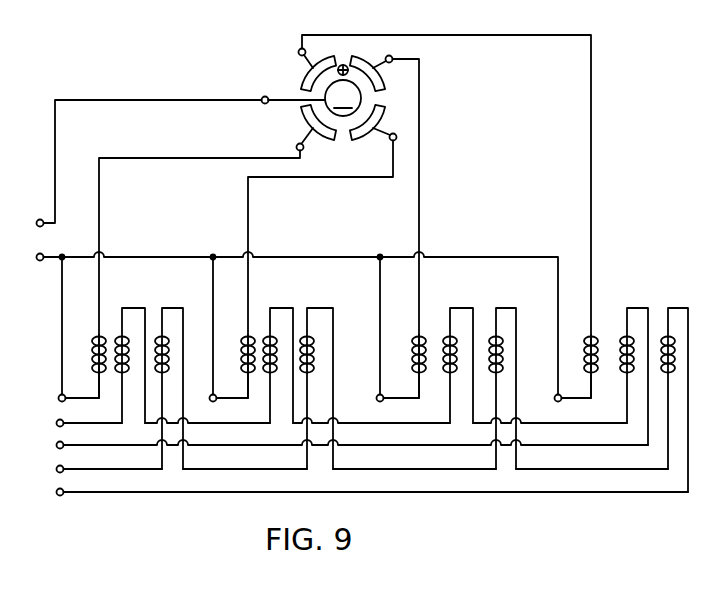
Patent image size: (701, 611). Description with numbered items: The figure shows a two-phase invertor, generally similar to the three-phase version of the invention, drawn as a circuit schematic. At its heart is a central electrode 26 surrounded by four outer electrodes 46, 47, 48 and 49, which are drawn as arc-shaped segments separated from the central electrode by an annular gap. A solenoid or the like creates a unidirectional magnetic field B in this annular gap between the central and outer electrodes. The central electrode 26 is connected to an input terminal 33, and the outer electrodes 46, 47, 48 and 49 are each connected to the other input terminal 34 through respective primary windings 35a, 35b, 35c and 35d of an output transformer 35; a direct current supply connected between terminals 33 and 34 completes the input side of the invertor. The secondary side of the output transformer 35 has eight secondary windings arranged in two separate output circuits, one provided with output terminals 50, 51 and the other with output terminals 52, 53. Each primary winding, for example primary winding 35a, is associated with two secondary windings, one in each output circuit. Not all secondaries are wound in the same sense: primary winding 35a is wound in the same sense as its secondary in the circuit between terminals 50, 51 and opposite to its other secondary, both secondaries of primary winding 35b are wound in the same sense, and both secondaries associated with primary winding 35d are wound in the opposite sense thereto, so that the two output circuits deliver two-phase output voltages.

The central electrode 26 is at (314, 98).
The unidirectional magnetic field B is at (345, 63).
The input terminal 33 is at (149, 162).
The input terminal 34 is at (295, 327).
The output transformer 35 is at (375, 368).
The primary winding 35a is at (94, 347).
The primary winding 35b is at (243, 347).
The primary winding 35c is at (414, 347).
The primary winding 35d is at (586, 347).
The outer electrode 46 is at (323, 128).
The outer electrode 47 is at (306, 80).
The outer electrode 48 is at (378, 82).
The outer electrode 49 is at (367, 131).
The output terminal 50 is at (329, 423).
The output terminal 51 is at (340, 444).
The output terminal 52 is at (350, 469).
The output terminal 53 is at (360, 491).